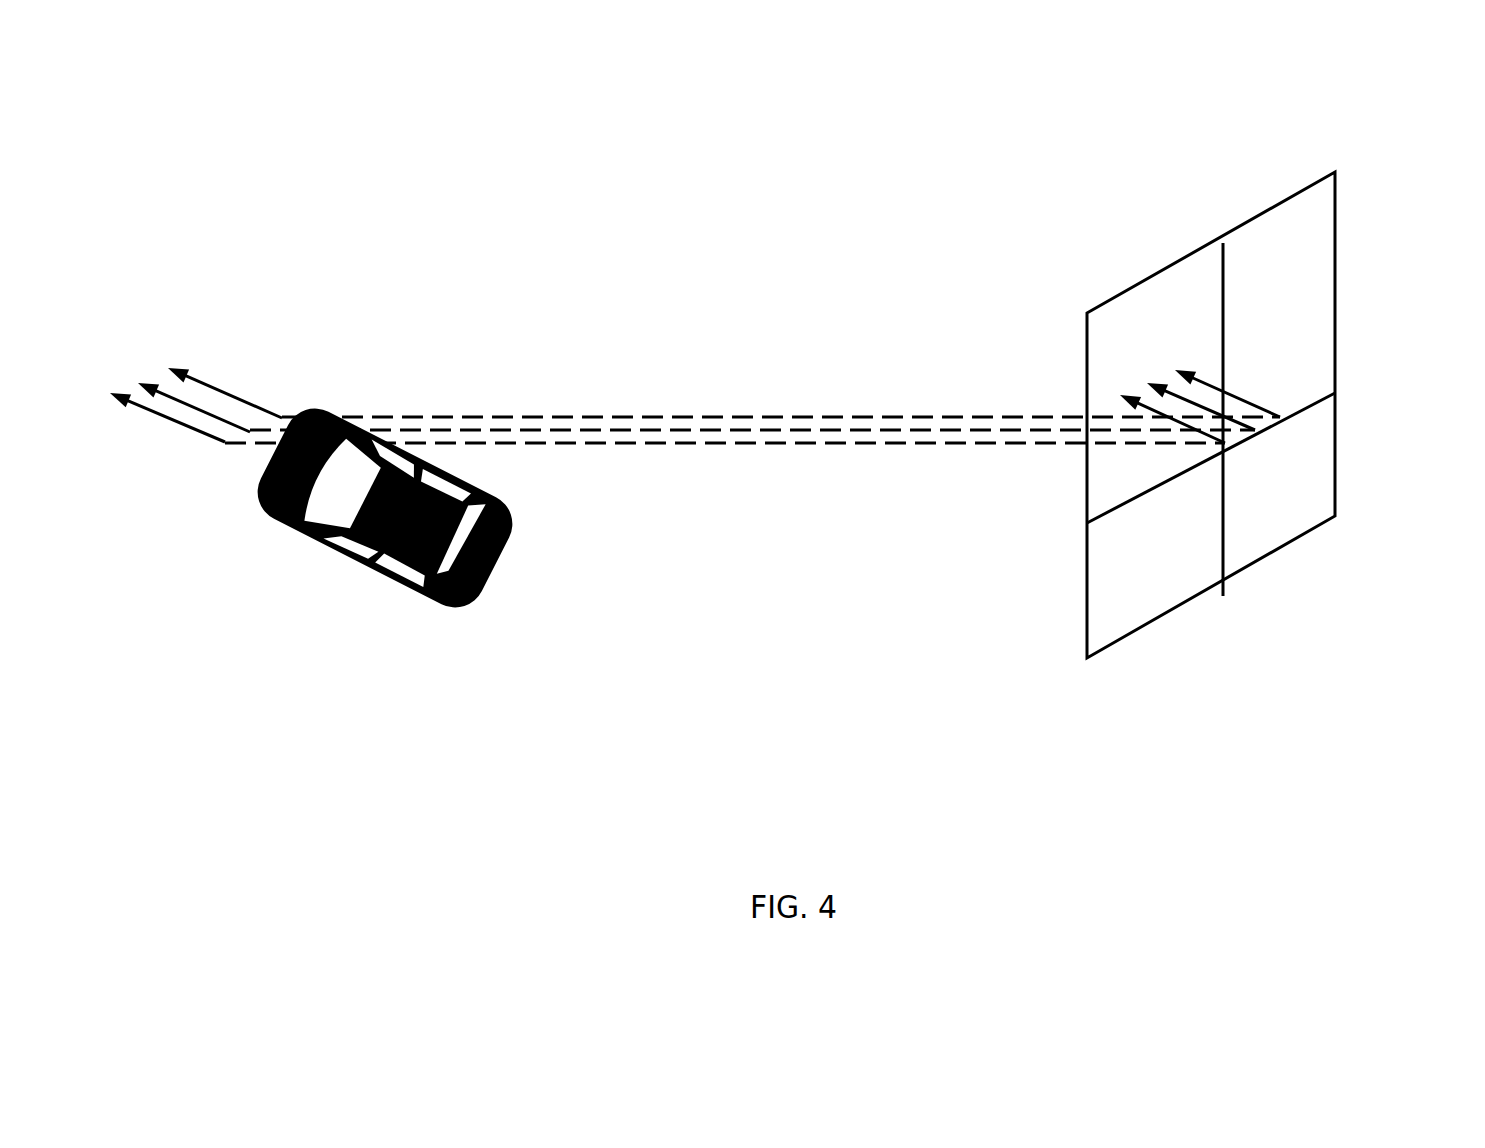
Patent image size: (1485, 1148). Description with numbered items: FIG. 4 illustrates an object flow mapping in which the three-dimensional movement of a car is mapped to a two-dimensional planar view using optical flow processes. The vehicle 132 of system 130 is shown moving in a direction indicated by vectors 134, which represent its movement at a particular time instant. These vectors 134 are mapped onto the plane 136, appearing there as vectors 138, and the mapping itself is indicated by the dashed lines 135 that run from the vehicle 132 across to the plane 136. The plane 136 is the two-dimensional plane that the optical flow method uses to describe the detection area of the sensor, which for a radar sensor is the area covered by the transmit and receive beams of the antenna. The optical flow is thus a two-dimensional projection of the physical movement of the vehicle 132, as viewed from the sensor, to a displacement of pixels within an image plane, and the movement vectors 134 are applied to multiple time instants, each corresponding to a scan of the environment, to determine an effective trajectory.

The system 130 is at (784, 479).
The vehicle 132 is at (392, 585).
The vectors 134 is at (171, 470).
The dashed lines 135 is at (639, 396).
The plane 136 is at (1342, 297).
The vectors 138 is at (1235, 373).